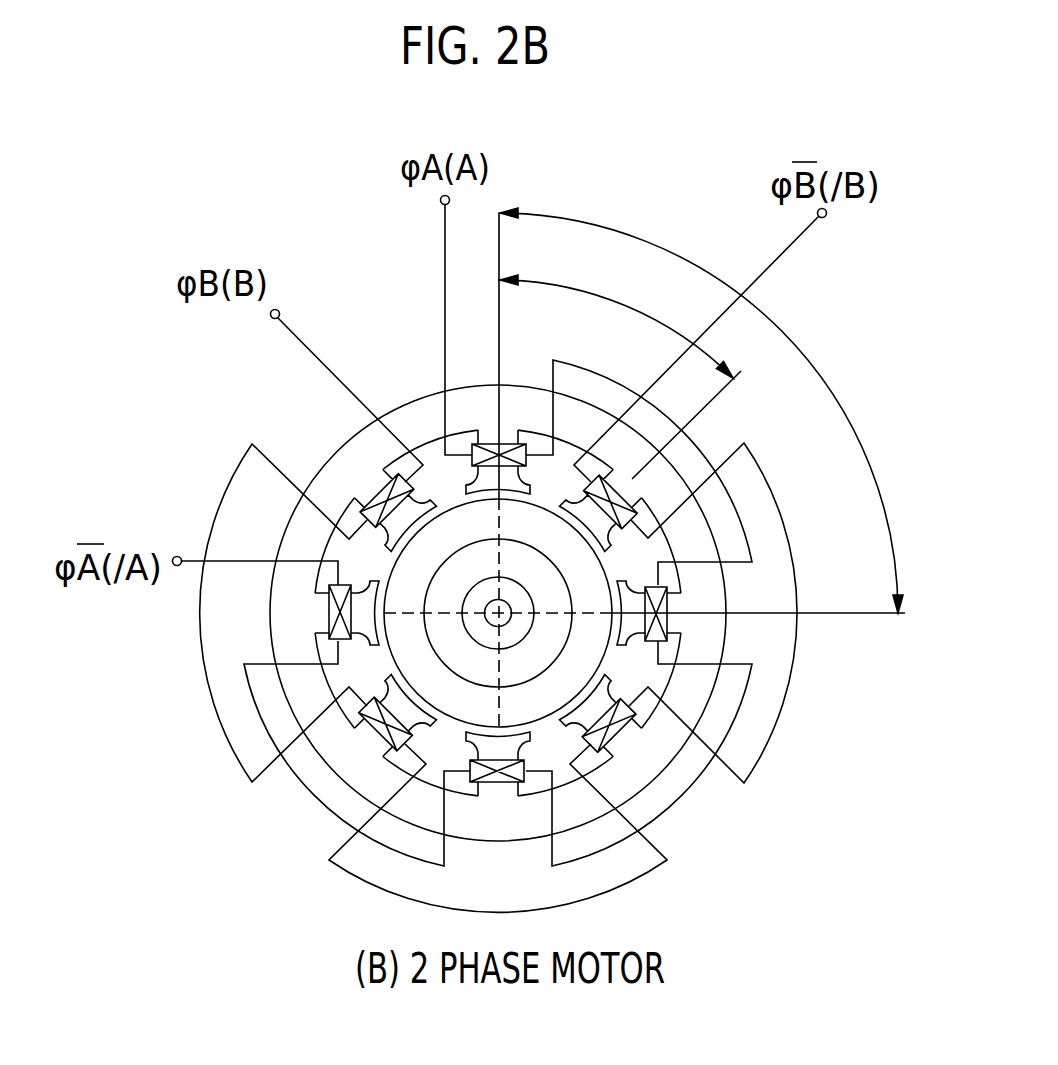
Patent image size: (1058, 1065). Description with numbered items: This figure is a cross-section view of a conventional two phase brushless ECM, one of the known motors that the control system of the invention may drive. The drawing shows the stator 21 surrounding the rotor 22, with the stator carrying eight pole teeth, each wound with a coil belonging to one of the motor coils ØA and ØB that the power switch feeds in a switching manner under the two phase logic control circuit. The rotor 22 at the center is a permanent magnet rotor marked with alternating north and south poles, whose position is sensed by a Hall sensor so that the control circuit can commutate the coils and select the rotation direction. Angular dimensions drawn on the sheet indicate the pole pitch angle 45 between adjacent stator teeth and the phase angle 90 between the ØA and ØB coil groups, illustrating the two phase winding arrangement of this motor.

The stator 21 is at (418, 410).
The rotor 22 is at (405, 578).
The 45 degree pole pitch angle 45 is at (616, 325).
The 90 degree phase angle 90 is at (701, 410).